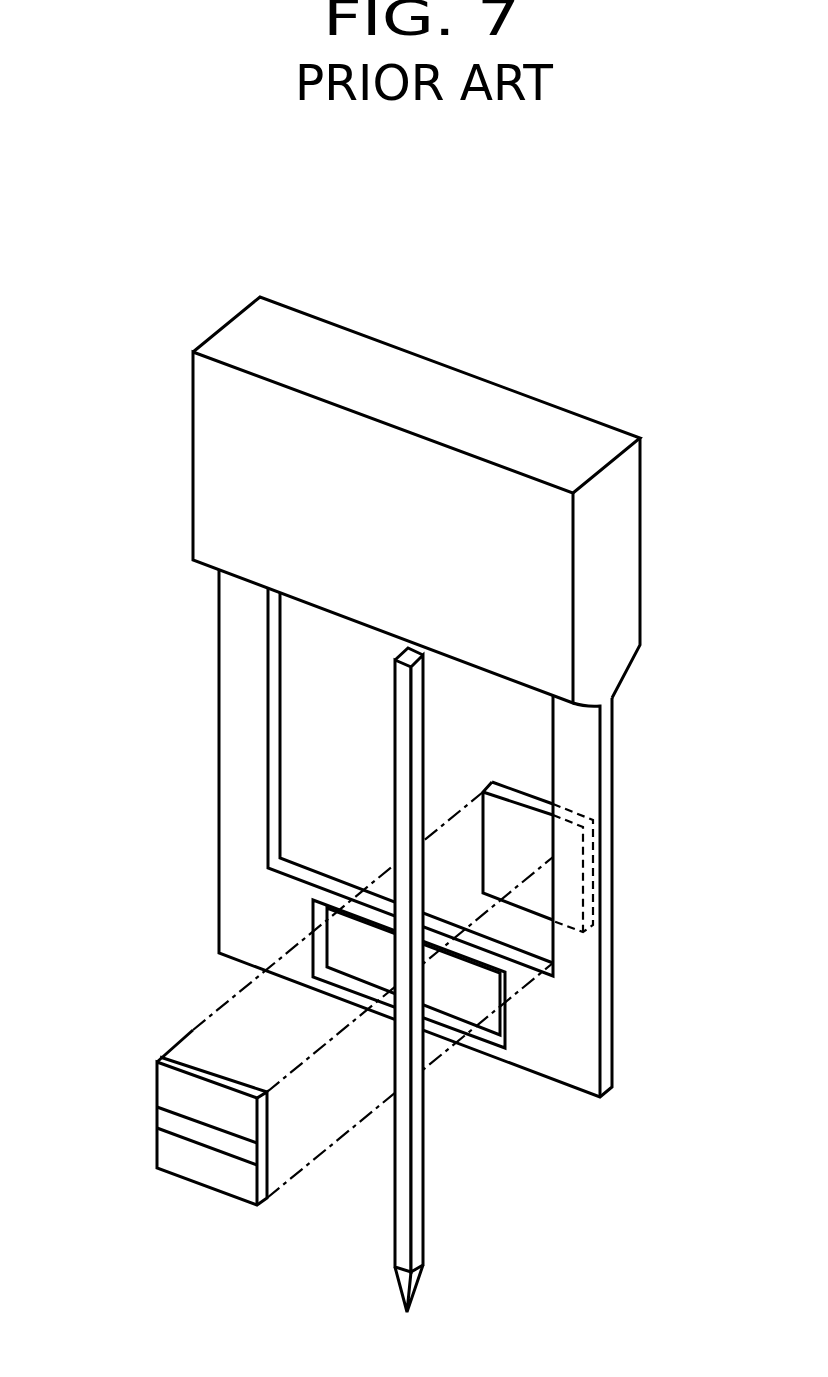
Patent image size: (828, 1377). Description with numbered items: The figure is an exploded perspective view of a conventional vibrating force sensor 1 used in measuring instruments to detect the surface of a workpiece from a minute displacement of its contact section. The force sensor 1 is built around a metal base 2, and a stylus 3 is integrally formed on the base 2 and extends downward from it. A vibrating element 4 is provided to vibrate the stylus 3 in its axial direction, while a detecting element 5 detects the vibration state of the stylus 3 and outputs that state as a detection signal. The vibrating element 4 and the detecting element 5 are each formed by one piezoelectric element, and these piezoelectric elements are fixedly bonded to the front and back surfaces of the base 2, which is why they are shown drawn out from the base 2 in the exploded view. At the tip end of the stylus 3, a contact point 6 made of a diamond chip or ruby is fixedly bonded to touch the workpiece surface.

The force sensor 1 is at (570, 323).
The metal base 2 is at (587, 980).
The stylus 3 is at (415, 1168).
The vibrating element 4 is at (165, 1085).
The detecting element 5 is at (165, 1150).
The contact point 6 is at (408, 1310).